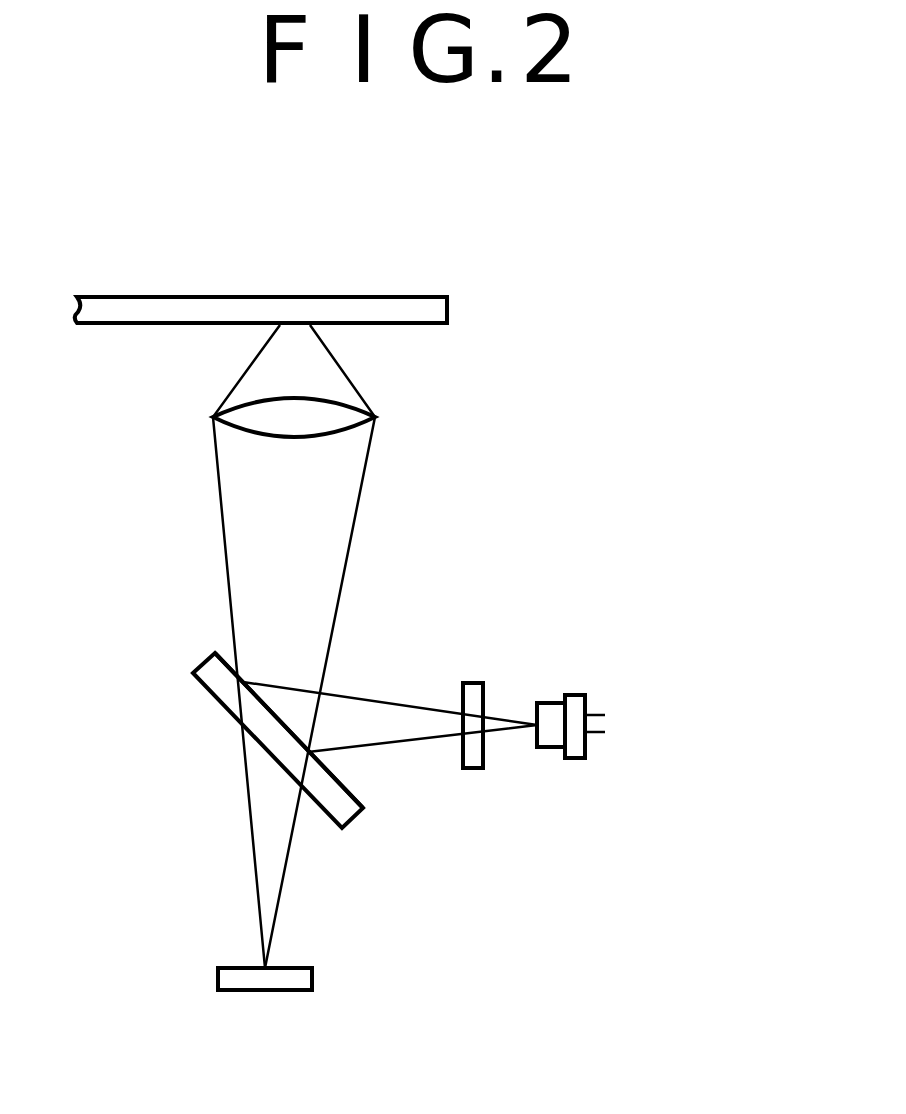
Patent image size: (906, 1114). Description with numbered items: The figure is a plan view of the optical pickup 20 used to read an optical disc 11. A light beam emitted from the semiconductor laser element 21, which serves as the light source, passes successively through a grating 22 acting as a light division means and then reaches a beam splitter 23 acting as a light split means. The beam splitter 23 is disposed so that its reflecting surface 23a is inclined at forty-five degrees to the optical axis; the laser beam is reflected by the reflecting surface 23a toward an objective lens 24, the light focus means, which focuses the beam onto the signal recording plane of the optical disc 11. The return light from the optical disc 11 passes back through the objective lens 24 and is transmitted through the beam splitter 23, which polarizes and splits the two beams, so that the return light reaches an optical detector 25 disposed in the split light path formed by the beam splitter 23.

The optical disc 11 is at (298, 296).
The optical pickup 20 is at (611, 352).
The semiconductor laser element 21 is at (548, 747).
The grating 22 is at (473, 682).
The beam splitter 23 is at (325, 810).
The reflecting surface 23a is at (343, 787).
The objective lens 24 is at (376, 416).
The optical detector 25 is at (262, 990).